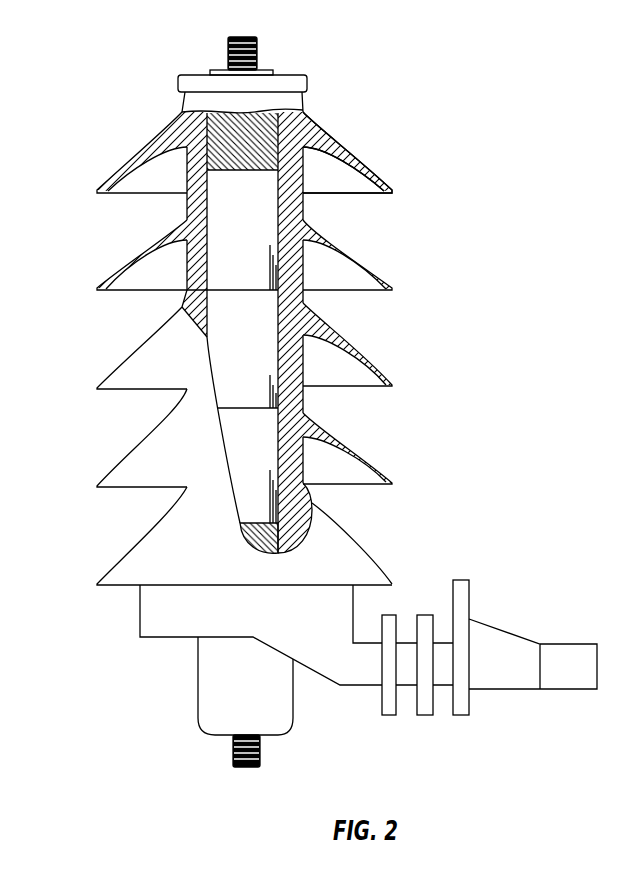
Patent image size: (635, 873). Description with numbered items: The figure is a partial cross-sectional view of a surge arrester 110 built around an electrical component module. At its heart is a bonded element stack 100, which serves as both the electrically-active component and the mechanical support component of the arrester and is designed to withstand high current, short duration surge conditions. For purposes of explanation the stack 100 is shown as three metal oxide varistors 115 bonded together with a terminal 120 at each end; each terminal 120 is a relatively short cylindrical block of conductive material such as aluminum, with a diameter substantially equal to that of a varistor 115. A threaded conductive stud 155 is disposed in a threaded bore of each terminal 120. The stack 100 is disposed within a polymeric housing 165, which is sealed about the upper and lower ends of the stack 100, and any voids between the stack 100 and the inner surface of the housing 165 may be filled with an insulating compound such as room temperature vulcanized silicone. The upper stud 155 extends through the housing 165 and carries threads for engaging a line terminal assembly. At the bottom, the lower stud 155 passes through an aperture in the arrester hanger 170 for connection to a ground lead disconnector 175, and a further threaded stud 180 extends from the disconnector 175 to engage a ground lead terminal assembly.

The bonded element stack 100 is at (275, 348).
The surge arrester 110 is at (377, 117).
The metal oxide varistor 115 is at (205, 333).
The terminal 120 is at (259, 346).
The threaded conductive stud 155 is at (275, 40).
The polymeric housing 165 is at (378, 152).
The arrester hanger 170 is at (489, 647).
The ground lead disconnector 175 is at (256, 660).
The threaded stud 180 is at (212, 764).